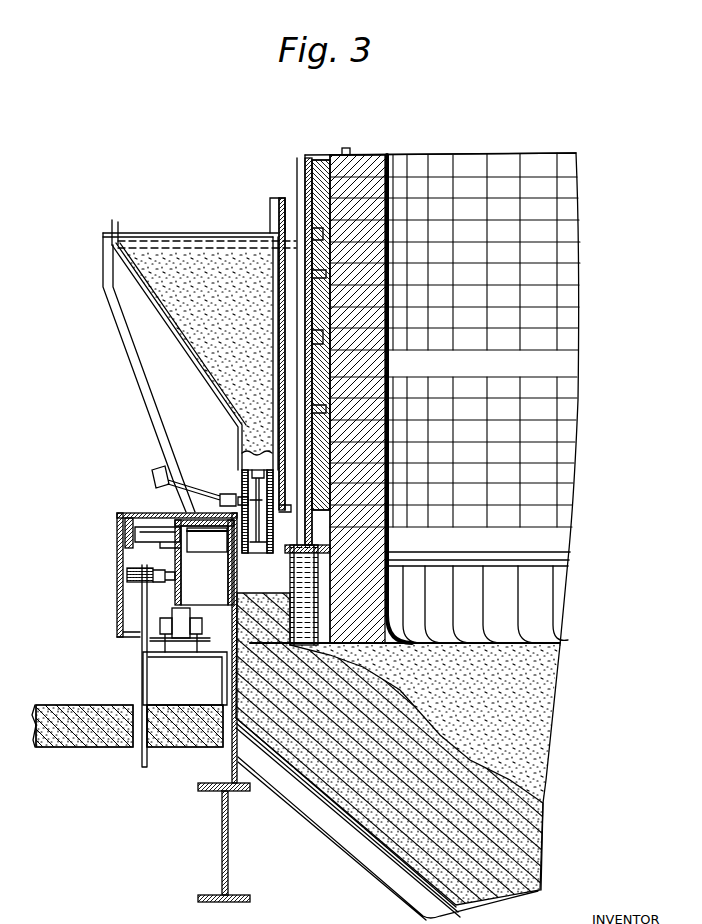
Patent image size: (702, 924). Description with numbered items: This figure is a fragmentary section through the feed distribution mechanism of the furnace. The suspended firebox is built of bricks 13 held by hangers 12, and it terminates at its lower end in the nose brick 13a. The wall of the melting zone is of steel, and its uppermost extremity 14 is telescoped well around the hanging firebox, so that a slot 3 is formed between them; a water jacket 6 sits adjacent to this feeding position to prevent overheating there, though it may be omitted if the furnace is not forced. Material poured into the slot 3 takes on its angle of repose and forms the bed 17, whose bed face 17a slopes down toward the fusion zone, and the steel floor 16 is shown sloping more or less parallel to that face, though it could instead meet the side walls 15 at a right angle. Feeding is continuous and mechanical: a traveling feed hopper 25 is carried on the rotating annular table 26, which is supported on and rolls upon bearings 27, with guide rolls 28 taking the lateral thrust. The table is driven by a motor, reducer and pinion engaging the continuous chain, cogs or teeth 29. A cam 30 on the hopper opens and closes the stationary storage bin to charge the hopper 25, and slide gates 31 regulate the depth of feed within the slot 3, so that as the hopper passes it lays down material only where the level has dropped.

The slot 3 is at (242, 591).
The water jacket 6 is at (306, 582).
The hangers 12 is at (323, 225).
The bricks 13 is at (376, 333).
The nose brick 13a is at (383, 594).
The uppermost extremity 14 is at (226, 530).
The side walls 15 is at (236, 631).
The floor 16 is at (366, 858).
The bed 17 is at (343, 806).
The bed face 17a is at (402, 686).
The feed hopper 25 is at (142, 254).
The rotating annular table 26 is at (158, 506).
The bearings 27 is at (178, 627).
The guide rolls 28 is at (140, 533).
The continuous chain, cogs or teeth 29 is at (150, 583).
The cam 30 is at (277, 197).
The slide gates 31 is at (260, 548).